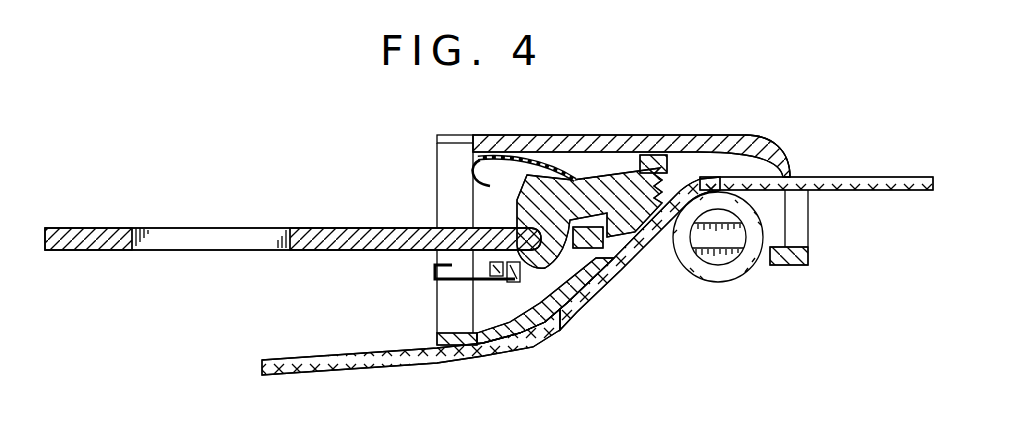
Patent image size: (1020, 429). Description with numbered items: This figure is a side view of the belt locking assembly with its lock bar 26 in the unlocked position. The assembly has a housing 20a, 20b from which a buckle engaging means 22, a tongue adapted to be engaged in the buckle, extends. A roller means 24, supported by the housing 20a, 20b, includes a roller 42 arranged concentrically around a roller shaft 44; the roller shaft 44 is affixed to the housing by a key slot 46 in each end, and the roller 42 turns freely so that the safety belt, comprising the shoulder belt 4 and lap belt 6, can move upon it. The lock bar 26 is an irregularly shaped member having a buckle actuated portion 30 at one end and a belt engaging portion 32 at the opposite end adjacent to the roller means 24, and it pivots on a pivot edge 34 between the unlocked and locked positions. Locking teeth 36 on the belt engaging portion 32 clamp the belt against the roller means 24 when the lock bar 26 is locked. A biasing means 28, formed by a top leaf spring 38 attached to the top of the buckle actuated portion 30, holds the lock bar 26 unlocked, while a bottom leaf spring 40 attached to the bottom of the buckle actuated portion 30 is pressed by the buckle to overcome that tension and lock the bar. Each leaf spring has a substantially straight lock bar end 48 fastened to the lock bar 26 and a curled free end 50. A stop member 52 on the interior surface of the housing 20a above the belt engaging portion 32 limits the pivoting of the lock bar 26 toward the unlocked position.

The shoulder belt 4 is at (870, 178).
The lap belt 6 is at (318, 366).
The housing 20a is at (762, 152).
The housing 20b is at (603, 285).
The buckle engaging means 22 is at (103, 235).
The roller means 24 is at (768, 282).
The lock bar 26 is at (576, 185).
The biasing means 28 is at (490, 136).
The buckle actuated portion 30 is at (545, 185).
The belt engaging portion 32 is at (636, 195).
The pivot edge 34 is at (538, 235).
The locking teeth 36 is at (668, 182).
The top leaf spring 38 is at (508, 150).
The bottom leaf spring 40 is at (458, 287).
The roller 42 is at (697, 272).
The roller shaft 44 is at (723, 258).
The key slot 46 is at (735, 236).
The lock bar end 48 is at (572, 178).
The free end 50 is at (480, 168).
The stop member 52 is at (655, 160).